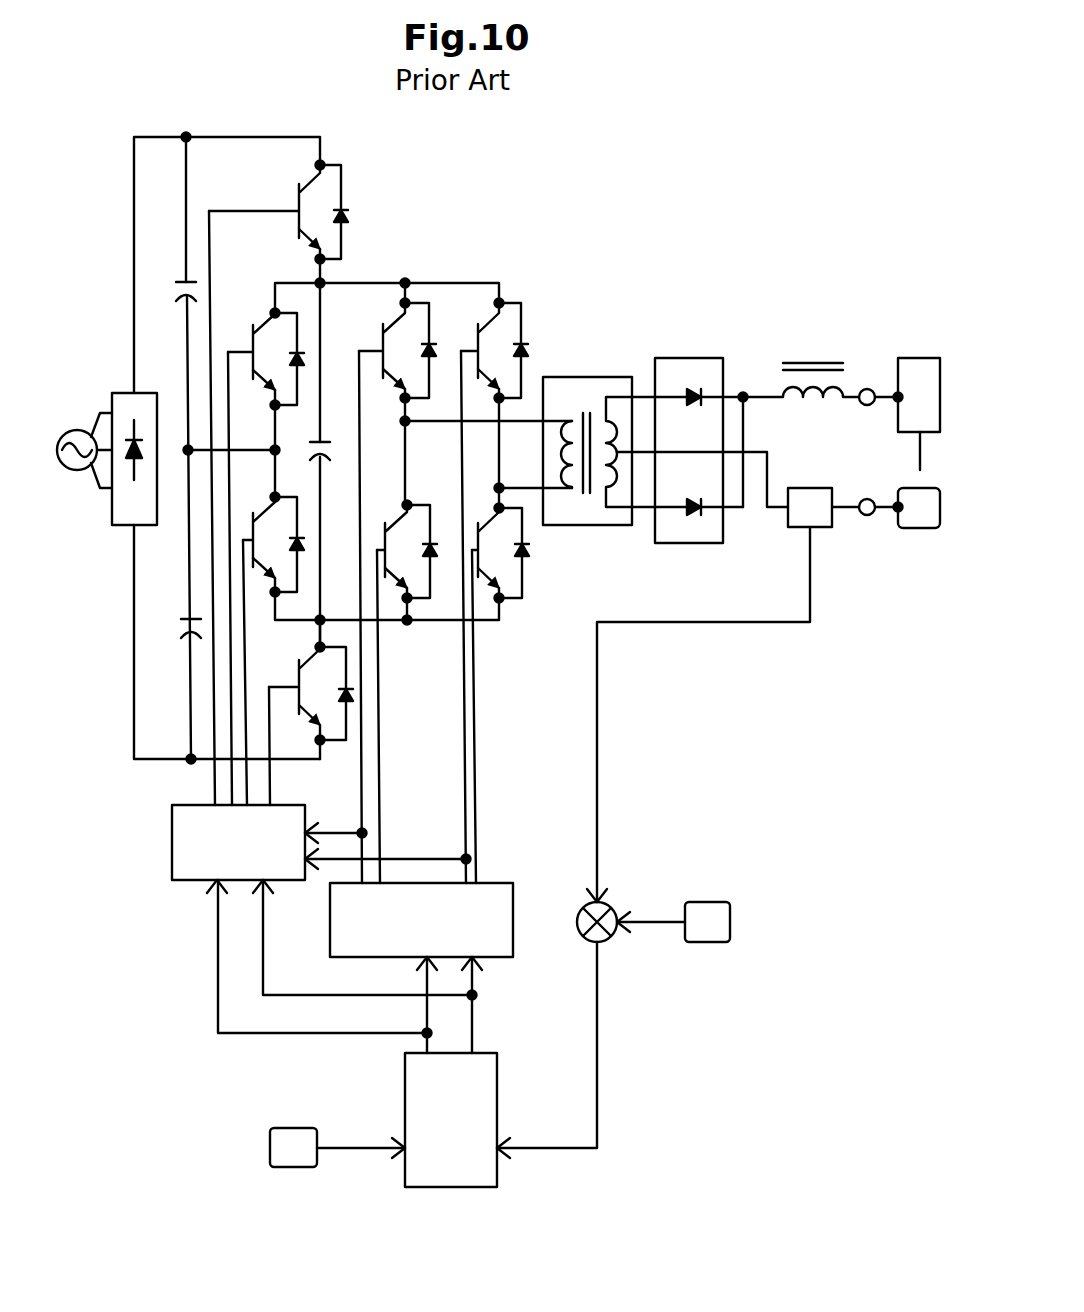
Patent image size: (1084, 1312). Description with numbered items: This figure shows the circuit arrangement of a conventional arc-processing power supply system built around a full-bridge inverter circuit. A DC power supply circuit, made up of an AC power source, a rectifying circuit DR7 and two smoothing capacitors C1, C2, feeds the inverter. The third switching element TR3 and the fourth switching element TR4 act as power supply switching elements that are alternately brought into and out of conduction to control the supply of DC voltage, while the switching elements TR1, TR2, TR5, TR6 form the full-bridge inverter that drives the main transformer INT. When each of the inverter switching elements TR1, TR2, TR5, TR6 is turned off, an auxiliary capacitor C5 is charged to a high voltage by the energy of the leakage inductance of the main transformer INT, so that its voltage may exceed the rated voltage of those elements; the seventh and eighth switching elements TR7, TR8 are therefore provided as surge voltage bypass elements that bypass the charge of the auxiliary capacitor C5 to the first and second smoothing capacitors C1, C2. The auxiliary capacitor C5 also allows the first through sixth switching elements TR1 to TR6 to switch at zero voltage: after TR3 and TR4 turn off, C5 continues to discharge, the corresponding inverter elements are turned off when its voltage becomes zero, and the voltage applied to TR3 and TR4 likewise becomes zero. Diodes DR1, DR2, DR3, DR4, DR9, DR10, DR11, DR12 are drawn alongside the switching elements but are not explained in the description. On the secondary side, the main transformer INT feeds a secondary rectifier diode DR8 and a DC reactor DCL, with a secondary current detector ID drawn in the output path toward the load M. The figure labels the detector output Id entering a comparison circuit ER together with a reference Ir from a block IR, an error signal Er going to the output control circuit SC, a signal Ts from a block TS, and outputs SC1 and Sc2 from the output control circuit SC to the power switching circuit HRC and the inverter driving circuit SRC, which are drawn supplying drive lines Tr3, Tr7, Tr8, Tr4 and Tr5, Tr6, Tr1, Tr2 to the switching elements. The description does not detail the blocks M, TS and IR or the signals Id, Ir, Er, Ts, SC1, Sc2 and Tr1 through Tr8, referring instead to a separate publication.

The first switching element TR1 is at (475, 351).
The second switching element TR2 is at (512, 566).
The third switching element TR3 is at (267, 212).
The fourth switching element TR4 is at (288, 694).
The fifth switching element TR5 is at (371, 351).
The sixth switching element TR6 is at (379, 550).
The seventh switching element TR7 is at (248, 359).
The eighth switching element TR8 is at (256, 541).
The diode DR1 is at (538, 350).
The diode DR2 is at (539, 553).
The diode DR3 is at (356, 212).
The diode DR4 is at (314, 694).
The rectifying circuit DR7 is at (101, 443).
The secondary rectifier diode DR8 is at (701, 434).
The diode DR9 is at (429, 378).
The diode DR10 is at (422, 581).
The diode DR11 is at (309, 346).
The diode DR12 is at (310, 534).
The first smoothing capacitor C1 is at (174, 278).
The second smoothing capacitor C2 is at (176, 615).
The auxiliary capacitor C5 is at (308, 438).
The main transformer INT is at (665, 437).
The DC reactor DCL is at (841, 399).
The secondary current detector ID is at (845, 493).
The motor/load M is at (919, 526).
The power switching circuit HRC is at (238, 842).
The inverter driving circuit SRC is at (421, 920).
The output control circuit SC is at (451, 1120).
The timing setter TS is at (293, 1127).
The current reference IR is at (707, 908).
The comparison circuit ER is at (575, 922).
The drive signal Tr1 is at (395, 617).
The drive signal Tr2 is at (488, 716).
The drive signal Tr3 is at (226, 508).
The drive signal Tr4 is at (287, 746).
The drive signal Tr5 is at (336, 617).
The drive signal Tr6 is at (394, 716).
The drive signal Tr7 is at (244, 578).
The drive signal Tr8 is at (258, 672).
The detected current signal Id is at (698, 714).
The current reference signal Ir is at (651, 910).
The error signal Er is at (547, 1050).
The timing signal Ts is at (361, 1138).
The selection signal 1 SC1 is at (322, 966).
The selection signal 2 Sc2 is at (385, 966).